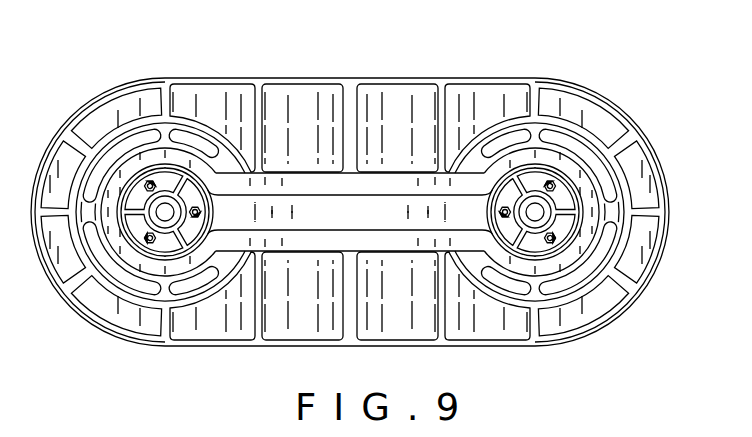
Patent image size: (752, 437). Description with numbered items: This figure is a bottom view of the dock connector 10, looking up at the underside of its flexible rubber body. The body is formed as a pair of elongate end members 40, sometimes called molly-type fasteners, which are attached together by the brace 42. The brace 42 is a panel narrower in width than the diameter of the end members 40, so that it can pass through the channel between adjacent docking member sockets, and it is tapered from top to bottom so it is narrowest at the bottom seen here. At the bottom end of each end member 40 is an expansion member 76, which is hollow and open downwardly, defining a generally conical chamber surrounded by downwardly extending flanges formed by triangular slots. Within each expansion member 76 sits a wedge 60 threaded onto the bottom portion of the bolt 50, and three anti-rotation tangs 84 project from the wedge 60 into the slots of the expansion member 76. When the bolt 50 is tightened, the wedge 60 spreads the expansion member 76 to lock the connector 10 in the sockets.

The connector 10 is at (622, 85).
The end members 40 is at (86, 156).
The brace 42 is at (378, 185).
The bolt 50 is at (535, 210).
The wedge 60 is at (188, 238).
The expansion member 76 is at (170, 164).
The anti-rotation tangs 84 is at (198, 207).